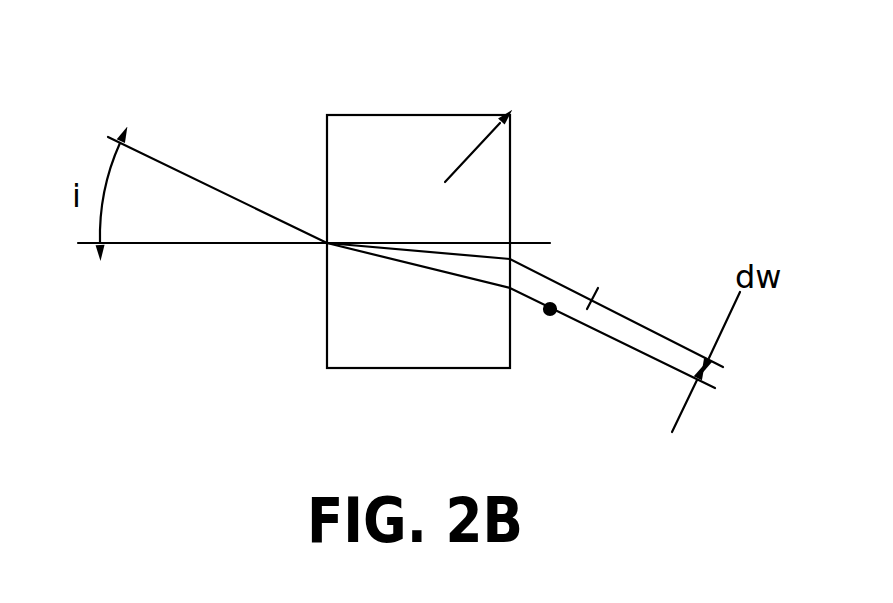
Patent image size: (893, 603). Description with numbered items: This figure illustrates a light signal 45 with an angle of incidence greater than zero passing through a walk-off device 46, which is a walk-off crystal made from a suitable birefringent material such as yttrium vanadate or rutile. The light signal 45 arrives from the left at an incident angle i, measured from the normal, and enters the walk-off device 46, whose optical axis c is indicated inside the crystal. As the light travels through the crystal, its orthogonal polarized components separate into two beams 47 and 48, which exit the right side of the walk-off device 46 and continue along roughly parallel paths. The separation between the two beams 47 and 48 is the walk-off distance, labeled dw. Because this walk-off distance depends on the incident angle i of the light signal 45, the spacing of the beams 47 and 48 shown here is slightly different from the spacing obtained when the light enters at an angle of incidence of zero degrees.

The light signal 45 is at (170, 165).
The walk-off device 46 is at (410, 113).
The beam 47 is at (615, 312).
The beam 48 is at (613, 342).